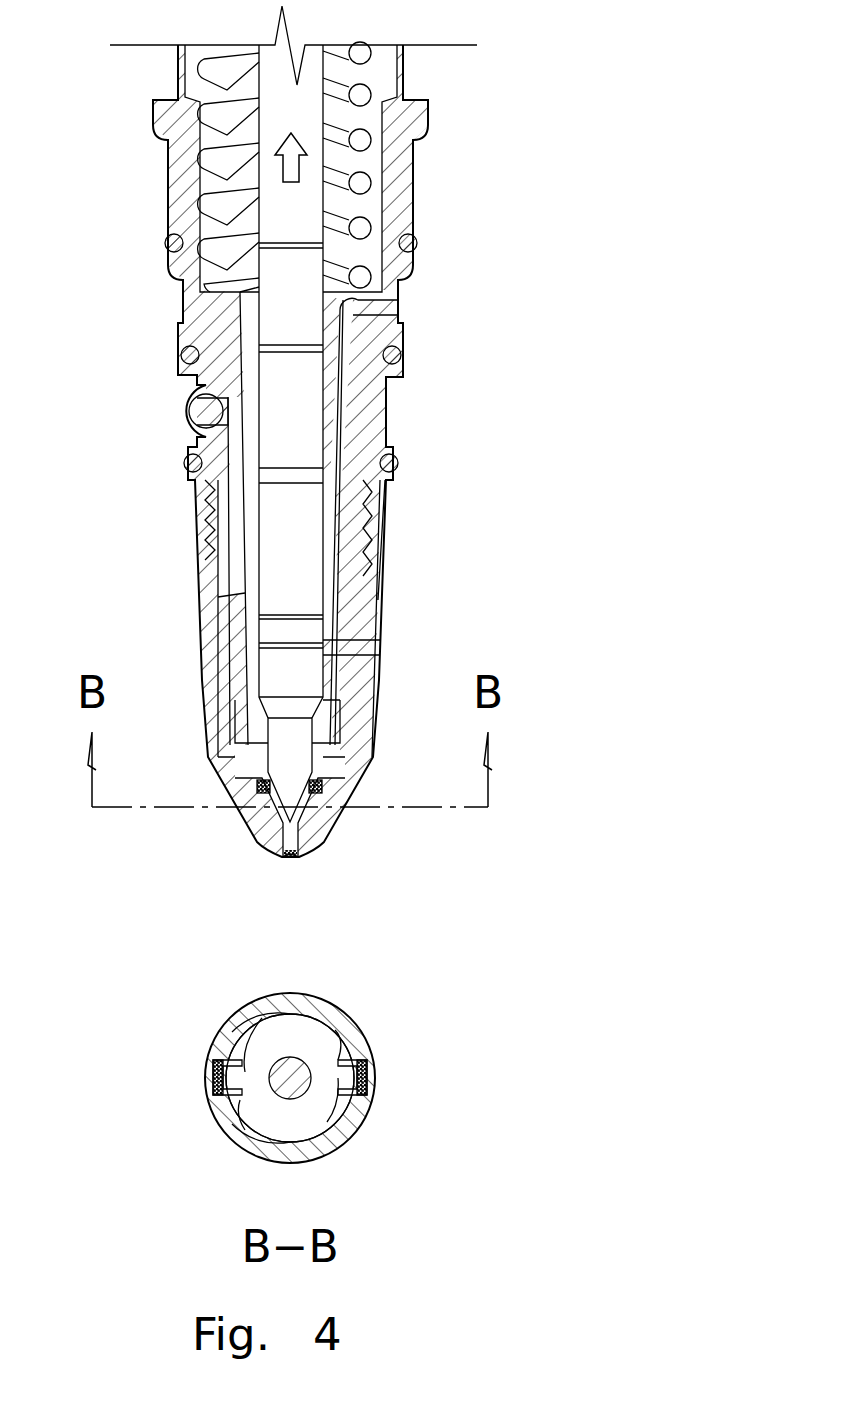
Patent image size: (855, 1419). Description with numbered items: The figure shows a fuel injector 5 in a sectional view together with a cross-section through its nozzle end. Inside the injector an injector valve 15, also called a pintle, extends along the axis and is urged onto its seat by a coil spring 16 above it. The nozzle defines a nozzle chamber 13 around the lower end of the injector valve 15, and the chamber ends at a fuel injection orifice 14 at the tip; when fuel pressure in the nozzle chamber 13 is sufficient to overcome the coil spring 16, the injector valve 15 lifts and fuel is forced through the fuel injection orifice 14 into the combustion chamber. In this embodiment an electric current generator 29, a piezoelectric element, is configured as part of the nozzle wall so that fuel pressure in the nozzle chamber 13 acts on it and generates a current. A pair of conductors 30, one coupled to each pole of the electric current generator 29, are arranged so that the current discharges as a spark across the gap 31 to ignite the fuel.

The fuel injector 5 is at (415, 173).
The nozzle chamber 13 is at (293, 1122).
The fuel injection orifice 14 is at (283, 852).
The injector valve 15 is at (293, 555).
The coil spring 16 is at (223, 198).
The electric current generator 29 is at (323, 787).
The conductors 30 is at (222, 1032).
The gap 31 is at (250, 1010).